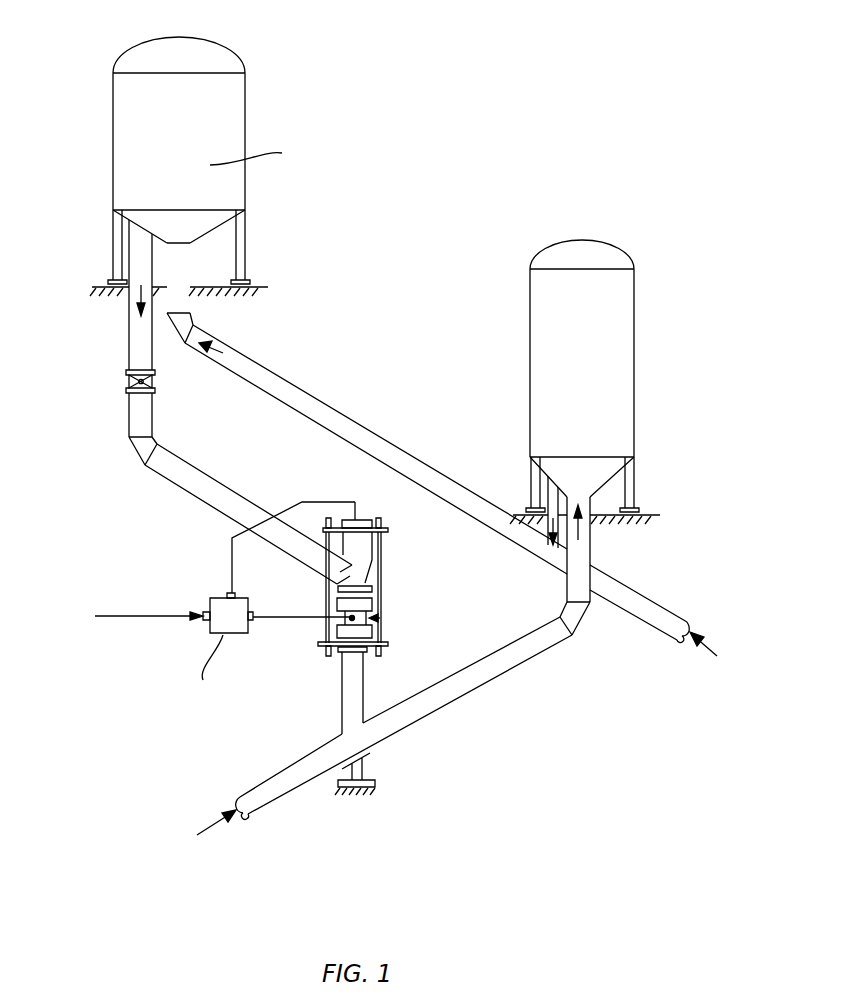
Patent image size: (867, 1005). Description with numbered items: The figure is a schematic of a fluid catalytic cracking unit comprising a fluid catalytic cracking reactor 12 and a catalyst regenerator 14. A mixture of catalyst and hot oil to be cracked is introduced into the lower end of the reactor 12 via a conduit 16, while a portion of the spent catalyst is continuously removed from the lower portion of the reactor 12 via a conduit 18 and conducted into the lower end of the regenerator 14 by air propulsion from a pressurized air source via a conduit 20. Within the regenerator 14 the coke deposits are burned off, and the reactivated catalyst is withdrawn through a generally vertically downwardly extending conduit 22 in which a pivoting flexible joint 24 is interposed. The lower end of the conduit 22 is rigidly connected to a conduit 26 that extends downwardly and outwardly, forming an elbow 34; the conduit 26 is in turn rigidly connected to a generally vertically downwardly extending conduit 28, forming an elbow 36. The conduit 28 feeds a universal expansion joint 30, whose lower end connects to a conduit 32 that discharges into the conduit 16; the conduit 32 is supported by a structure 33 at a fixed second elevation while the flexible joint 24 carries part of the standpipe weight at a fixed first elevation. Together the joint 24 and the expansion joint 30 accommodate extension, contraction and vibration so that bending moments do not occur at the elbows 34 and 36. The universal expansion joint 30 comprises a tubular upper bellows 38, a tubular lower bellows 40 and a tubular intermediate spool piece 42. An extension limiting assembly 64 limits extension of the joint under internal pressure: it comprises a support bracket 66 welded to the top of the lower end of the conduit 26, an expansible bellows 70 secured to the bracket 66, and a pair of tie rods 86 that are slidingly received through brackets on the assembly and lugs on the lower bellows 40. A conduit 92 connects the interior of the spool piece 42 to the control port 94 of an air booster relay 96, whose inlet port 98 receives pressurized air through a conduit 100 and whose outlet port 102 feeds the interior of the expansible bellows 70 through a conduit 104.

The fluid catalytic cracking reactor 12 is at (634, 319).
The catalyst regenerator 14 is at (245, 113).
The conduit 16 is at (457, 702).
The conduit 18 is at (548, 490).
The conduit 20 is at (368, 428).
The generally vertically downwardly extending conduit 22 is at (129, 332).
The pivoting flexible joint 24 is at (126, 379).
The conduit 26 is at (188, 486).
The generally vertically downwardly extending conduit 28 is at (362, 597).
The universal expansion joint 30 is at (380, 648).
The generally vertically downwardly extending conduit 32 is at (363, 688).
The structure 33 is at (365, 770).
The elbow 34 is at (133, 448).
The elbow 36 is at (362, 572).
The tubular upper bellows 38 is at (337, 601).
The tubular lower bellows 40 is at (362, 634).
The tubular intermediate spool piece 42 is at (380, 618).
The extension limiting assembly 64 is at (372, 516).
The support bracket 66 is at (365, 548).
The expansible bellows 70 is at (356, 514).
The tie rods 86 is at (382, 583).
The conduit 92 is at (282, 618).
The control port 94 is at (250, 599).
The air booster relay 96 is at (211, 598).
The inlet port 98 is at (203, 612).
The conduit 100 is at (136, 616).
The outlet port 102 is at (233, 590).
The conduit 104 is at (282, 513).